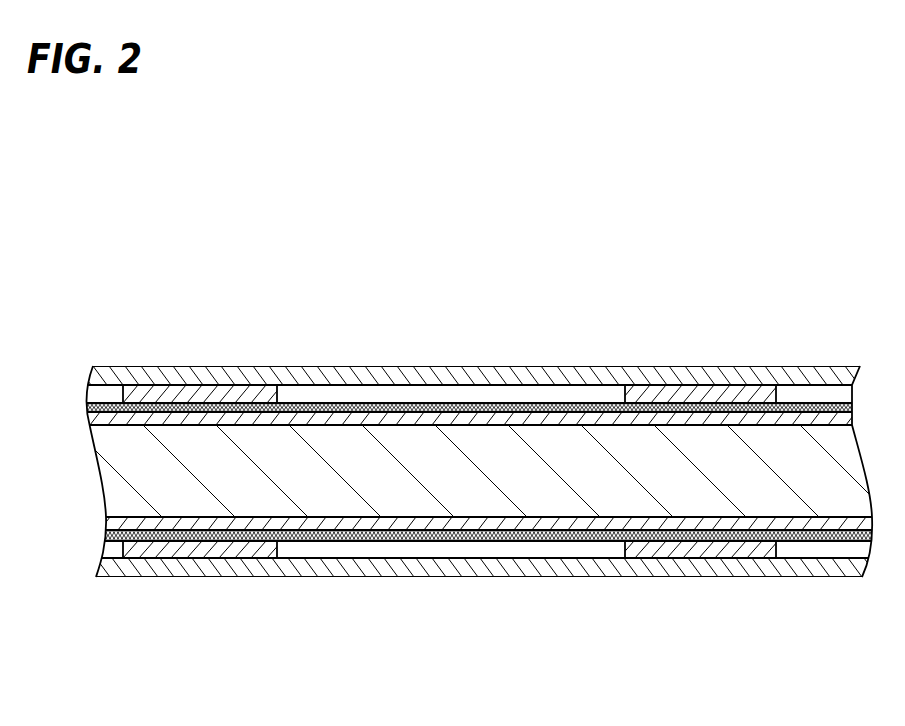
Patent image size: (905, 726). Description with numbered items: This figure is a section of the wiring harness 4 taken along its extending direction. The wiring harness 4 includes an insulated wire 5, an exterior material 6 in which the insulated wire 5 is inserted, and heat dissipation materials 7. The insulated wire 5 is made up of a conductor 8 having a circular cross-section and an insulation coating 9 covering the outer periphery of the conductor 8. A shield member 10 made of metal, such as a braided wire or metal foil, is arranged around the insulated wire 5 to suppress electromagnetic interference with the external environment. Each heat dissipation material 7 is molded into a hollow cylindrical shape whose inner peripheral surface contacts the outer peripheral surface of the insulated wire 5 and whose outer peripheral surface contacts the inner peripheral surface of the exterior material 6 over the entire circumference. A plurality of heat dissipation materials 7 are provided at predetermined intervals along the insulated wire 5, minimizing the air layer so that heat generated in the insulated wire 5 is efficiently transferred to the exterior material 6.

The wiring harness 4 is at (446, 491).
The insulated wire 5 is at (446, 544).
The exterior material 6 is at (517, 371).
The heat dissipation material 7 is at (218, 392).
The conductor 8 is at (320, 494).
The insulation coating 9 is at (370, 523).
The shield member 10 is at (435, 416).